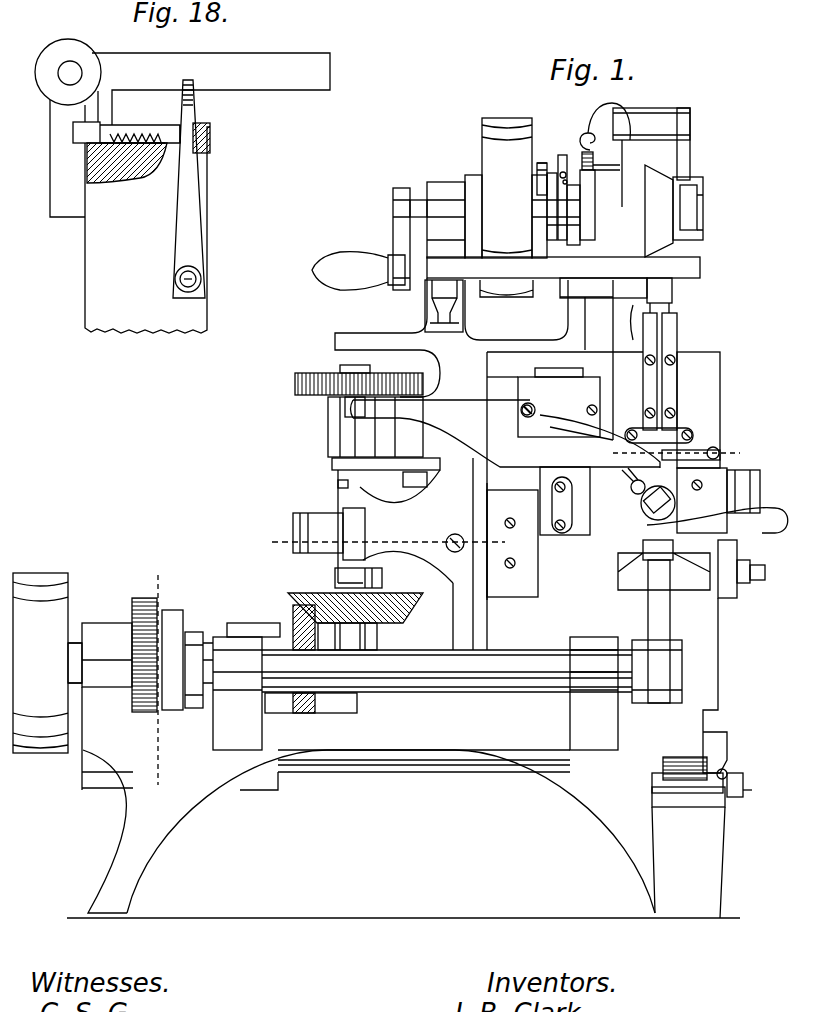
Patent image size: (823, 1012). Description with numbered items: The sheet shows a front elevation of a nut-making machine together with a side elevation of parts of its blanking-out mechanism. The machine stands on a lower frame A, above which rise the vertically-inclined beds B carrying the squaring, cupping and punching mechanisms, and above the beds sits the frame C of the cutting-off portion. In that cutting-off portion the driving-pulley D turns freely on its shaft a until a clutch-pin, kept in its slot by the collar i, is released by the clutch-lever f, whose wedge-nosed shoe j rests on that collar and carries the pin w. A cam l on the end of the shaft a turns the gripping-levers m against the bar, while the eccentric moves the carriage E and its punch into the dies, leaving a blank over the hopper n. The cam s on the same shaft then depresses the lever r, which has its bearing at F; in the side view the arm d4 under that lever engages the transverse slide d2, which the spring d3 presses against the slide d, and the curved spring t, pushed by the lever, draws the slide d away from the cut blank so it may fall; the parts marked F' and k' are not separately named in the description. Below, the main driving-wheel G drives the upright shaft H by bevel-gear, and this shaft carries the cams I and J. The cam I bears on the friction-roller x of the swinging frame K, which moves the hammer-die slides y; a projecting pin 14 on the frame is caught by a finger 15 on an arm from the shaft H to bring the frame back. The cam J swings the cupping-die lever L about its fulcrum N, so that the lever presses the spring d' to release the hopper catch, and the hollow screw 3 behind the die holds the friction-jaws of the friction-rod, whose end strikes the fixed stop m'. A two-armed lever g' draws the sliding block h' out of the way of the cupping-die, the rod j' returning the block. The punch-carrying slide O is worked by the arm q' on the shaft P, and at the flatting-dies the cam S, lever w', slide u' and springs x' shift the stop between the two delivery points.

In FIG. 18, the arm hub F' is at (68, 128).
In FIG. 18, the lever r is at (211, 89).
In FIG. 18, the arm d4 is at (104, 100).
In FIG. 18, the transverse slide d2 is at (86, 132).
In FIG. 18, the spring d3 is at (137, 127).
In FIG. 18, the slide d is at (201, 128).
In FIG. 18, the spring t is at (189, 189).
In FIG. 1, the shaft a is at (369, 239).
In FIG. 1, the pin w is at (349, 473).
In FIG. 1, the clutch-lever f is at (562, 189).
In FIG. 1, the shoe j is at (567, 171).
In FIG. 1, the collar i is at (563, 209).
In FIG. 1, the cam s is at (605, 171).
In FIG. 1, the driving-pulley D is at (487, 188).
In FIG. 1, the bearing F is at (651, 157).
In FIG. 1, the gripping-levers m is at (693, 144).
In FIG. 1, the carriage E is at (659, 211).
In FIG. 1, the cam l is at (688, 208).
In FIG. 1, the frame of the cutting-off portion C is at (517, 304).
In FIG. 1, the hopper n is at (659, 295).
In FIG. 1, the vertically-inclined bed B is at (676, 386).
In FIG. 1, the fulcrum N is at (565, 476).
In FIG. 1, the cam J is at (367, 373).
In FIG. 1, the lever L is at (494, 432).
In FIG. 1, the spring d' is at (682, 434).
In FIG. 1, the friction-roller x is at (543, 502).
In FIG. 1, the stop m' is at (686, 500).
In FIG. 1, the two-armed lever g' is at (711, 516).
In FIG. 1, the rod j' is at (776, 520).
In FIG. 1, the slides or hammer-dies y is at (565, 501).
In FIG. 1, the swinging frame K is at (435, 554).
In FIG. 1, the projecting finger 15 is at (415, 479).
In FIG. 1, the projecting pin 14 is at (338, 489).
In FIG. 1, the cam I is at (318, 533).
In FIG. 1, the hollow screw 3 is at (388, 545).
In FIG. 1, the upright shaft H is at (355, 609).
In FIG. 1, the punch-carrying slide O is at (691, 569).
In FIG. 1, the sliding block h' is at (657, 631).
In FIG. 1, the shaft P is at (350, 686).
In FIG. 1, the lower frame A is at (403, 770).
In FIG. 1, the main driving-wheel G is at (47, 663).
In FIG. 1, the gear k' is at (157, 655).
In FIG. 1, the arm q' is at (194, 670).
In FIG. 1, the cam S is at (689, 702).
In FIG. 1, the lever w' is at (722, 768).
In FIG. 1, the slide u' is at (735, 785).
In FIG. 1, the springs x' is at (753, 790).